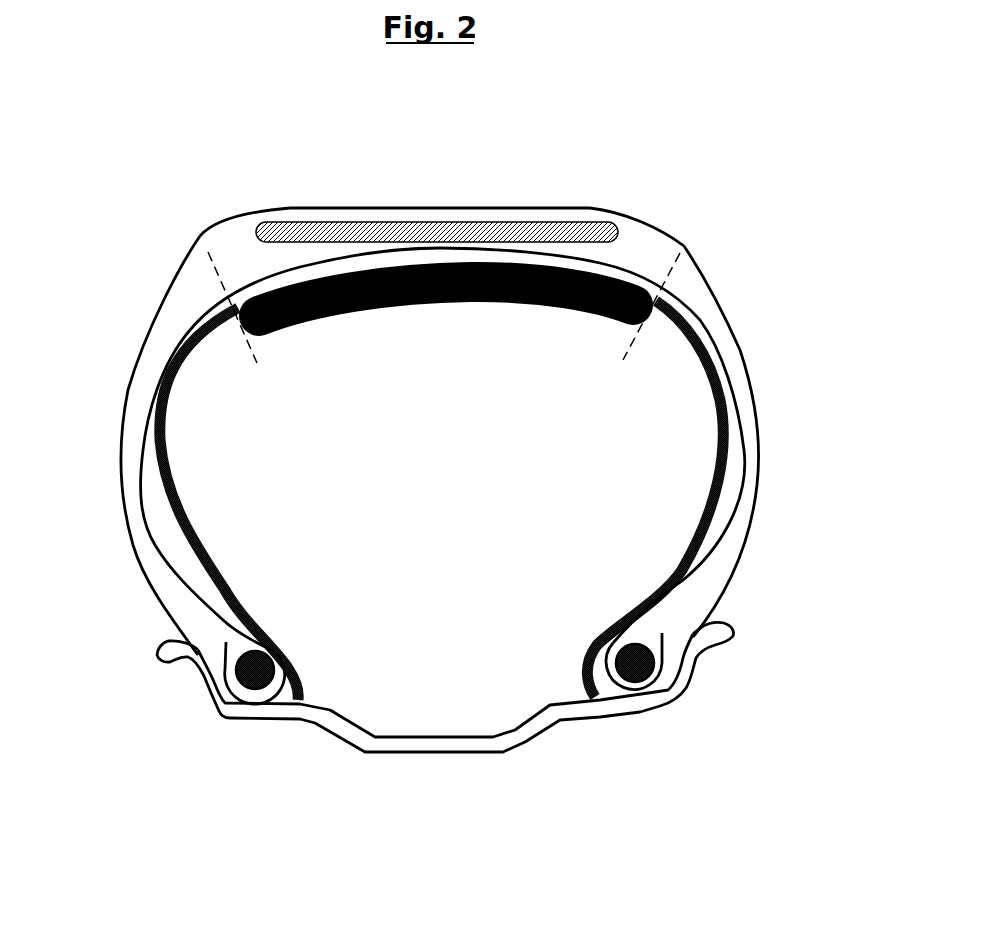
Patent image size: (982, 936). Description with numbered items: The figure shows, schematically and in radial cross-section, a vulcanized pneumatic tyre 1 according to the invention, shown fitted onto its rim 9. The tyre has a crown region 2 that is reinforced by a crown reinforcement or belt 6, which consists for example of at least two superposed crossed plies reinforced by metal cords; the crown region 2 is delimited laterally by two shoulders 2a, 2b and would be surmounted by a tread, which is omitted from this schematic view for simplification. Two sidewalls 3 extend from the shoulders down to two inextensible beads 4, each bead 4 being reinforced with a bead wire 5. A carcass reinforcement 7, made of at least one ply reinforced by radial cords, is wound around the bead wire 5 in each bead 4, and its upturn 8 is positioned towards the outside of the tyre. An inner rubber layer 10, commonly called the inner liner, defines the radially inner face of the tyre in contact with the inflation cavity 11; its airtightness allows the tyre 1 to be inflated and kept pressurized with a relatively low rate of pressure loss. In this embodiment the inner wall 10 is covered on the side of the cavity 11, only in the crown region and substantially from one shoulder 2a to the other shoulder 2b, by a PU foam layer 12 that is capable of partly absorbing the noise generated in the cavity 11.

The pneumatic tyre 1 is at (790, 367).
The crown region 2 is at (593, 215).
The shoulder 2a is at (196, 218).
The shoulder 2b is at (694, 227).
The sidewall 3 is at (129, 442).
The bead 4 is at (443, 697).
The bead wire 5 is at (255, 670).
The belt 6 is at (443, 221).
The carcass reinforcement 7 is at (164, 326).
The upturn 8 is at (225, 650).
The rim 9 is at (213, 680).
The inner rubber layer 10 is at (716, 388).
The inflation cavity 11 is at (270, 482).
The PU foam layer 12 is at (604, 306).